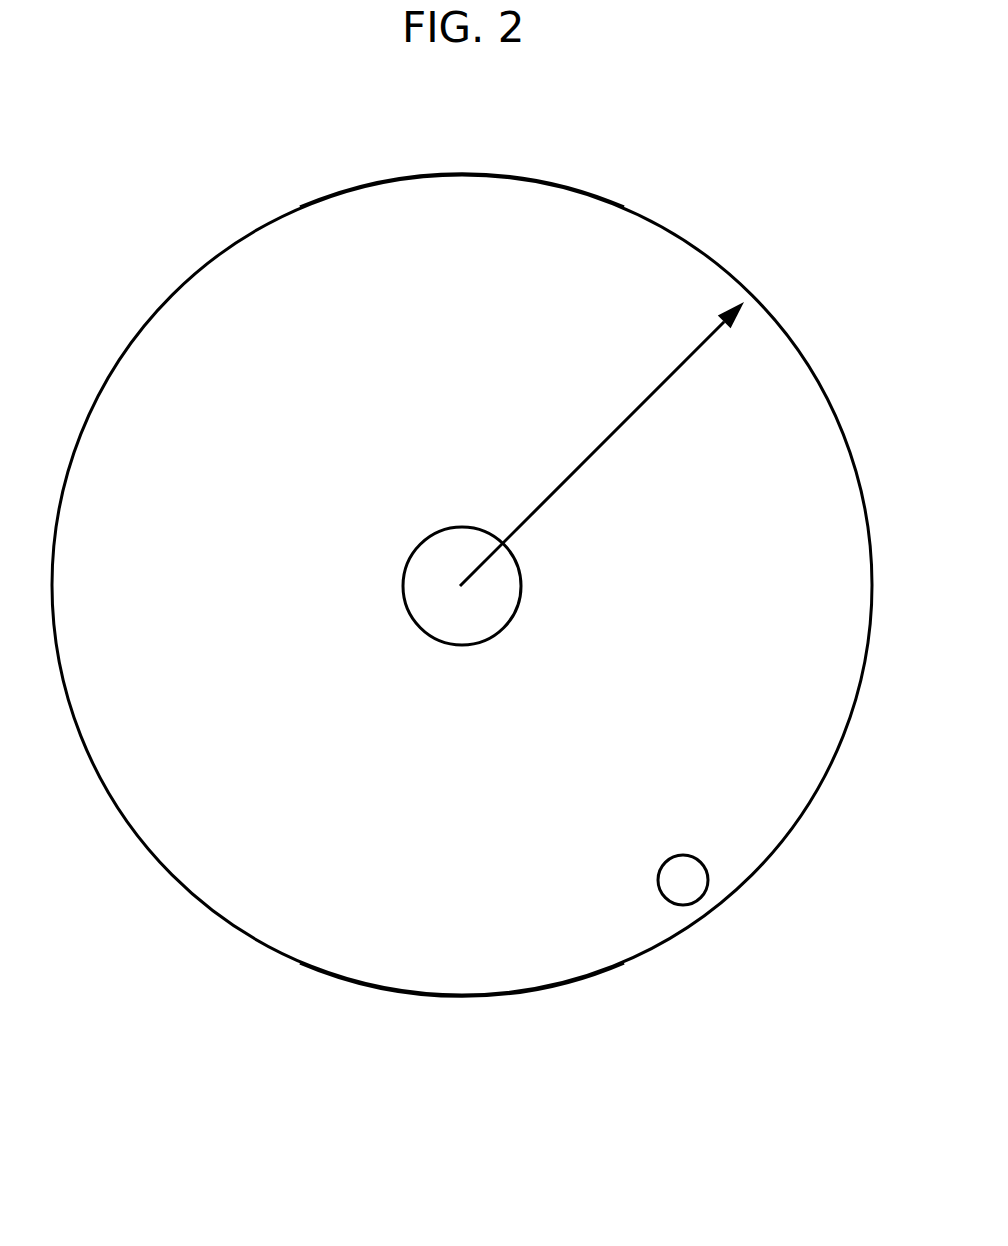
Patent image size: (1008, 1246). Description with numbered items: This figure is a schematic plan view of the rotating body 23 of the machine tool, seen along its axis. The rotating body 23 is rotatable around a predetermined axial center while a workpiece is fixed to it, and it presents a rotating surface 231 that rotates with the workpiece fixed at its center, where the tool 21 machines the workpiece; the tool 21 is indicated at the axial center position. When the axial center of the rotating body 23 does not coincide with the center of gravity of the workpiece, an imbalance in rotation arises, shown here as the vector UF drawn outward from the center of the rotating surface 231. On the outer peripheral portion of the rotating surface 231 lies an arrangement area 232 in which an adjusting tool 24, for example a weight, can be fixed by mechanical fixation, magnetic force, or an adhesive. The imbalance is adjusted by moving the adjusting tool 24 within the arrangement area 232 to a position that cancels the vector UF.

The rotating body 23 is at (749, 163).
The arrangement area 232 is at (468, 186).
The rotating surface 231 is at (458, 975).
The tool 21 is at (457, 615).
The adjusting tool 24 is at (683, 892).
The vector of the imbalance in rotation UF is at (635, 408).